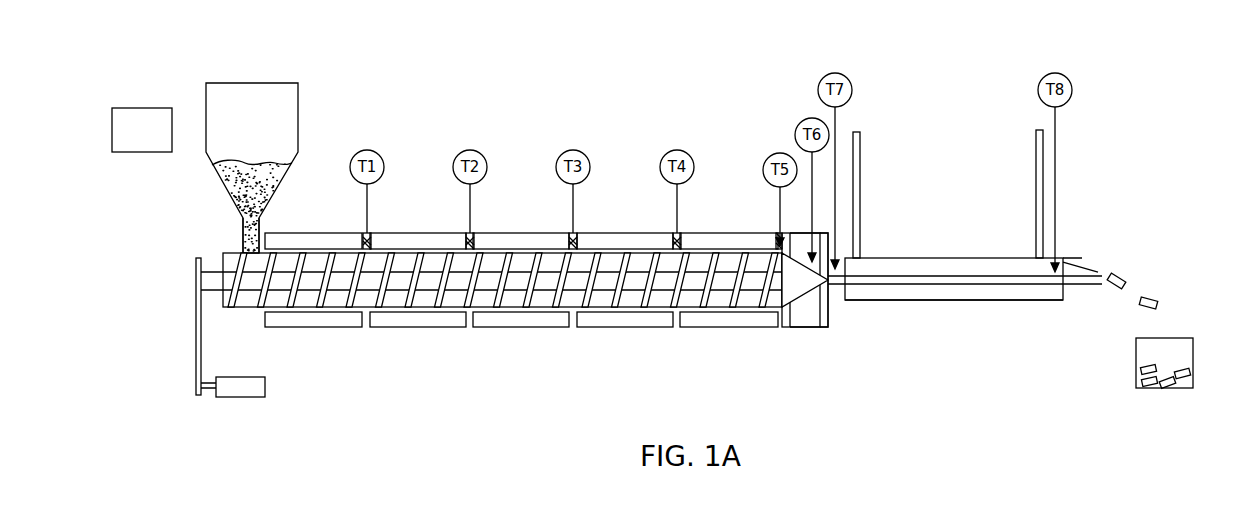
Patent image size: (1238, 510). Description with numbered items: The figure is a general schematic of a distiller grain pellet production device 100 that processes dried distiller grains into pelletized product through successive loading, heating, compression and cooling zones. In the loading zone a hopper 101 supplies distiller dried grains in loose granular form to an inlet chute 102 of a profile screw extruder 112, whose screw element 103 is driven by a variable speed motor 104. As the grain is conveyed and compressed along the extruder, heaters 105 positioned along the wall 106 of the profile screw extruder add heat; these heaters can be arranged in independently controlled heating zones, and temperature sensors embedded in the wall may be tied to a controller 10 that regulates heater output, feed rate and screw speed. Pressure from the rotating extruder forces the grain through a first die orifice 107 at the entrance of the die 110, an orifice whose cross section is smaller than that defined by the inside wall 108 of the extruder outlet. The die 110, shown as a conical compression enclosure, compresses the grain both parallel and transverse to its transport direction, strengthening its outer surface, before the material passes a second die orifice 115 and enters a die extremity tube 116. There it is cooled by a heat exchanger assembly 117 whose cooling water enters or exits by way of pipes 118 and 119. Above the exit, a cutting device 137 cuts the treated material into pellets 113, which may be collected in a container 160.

The controller 10 is at (137, 105).
The distiller grain pellet production device 100 is at (690, 80).
The hopper 101 is at (299, 123).
The inlet chute 102 is at (244, 243).
The screw element 103 is at (222, 290).
The variable speed motor 104 is at (248, 397).
The heaters 105 is at (334, 233).
The wall of the profile screw extruder 106 is at (758, 240).
The first die orifice 107 is at (792, 318).
The inside wall of the extruder outlet 108 is at (733, 262).
The die 110 is at (804, 297).
The profile screw extruder 112 is at (588, 287).
The pellets 113 is at (1148, 296).
The second die orifice 115 is at (822, 290).
The die extremity tube 116 is at (976, 284).
The heat exchanger assembly 117 is at (1039, 300).
The pipe 118 is at (861, 188).
The pipe 119 is at (1036, 222).
The cutting device 137 is at (1071, 257).
The container 160 is at (1186, 389).